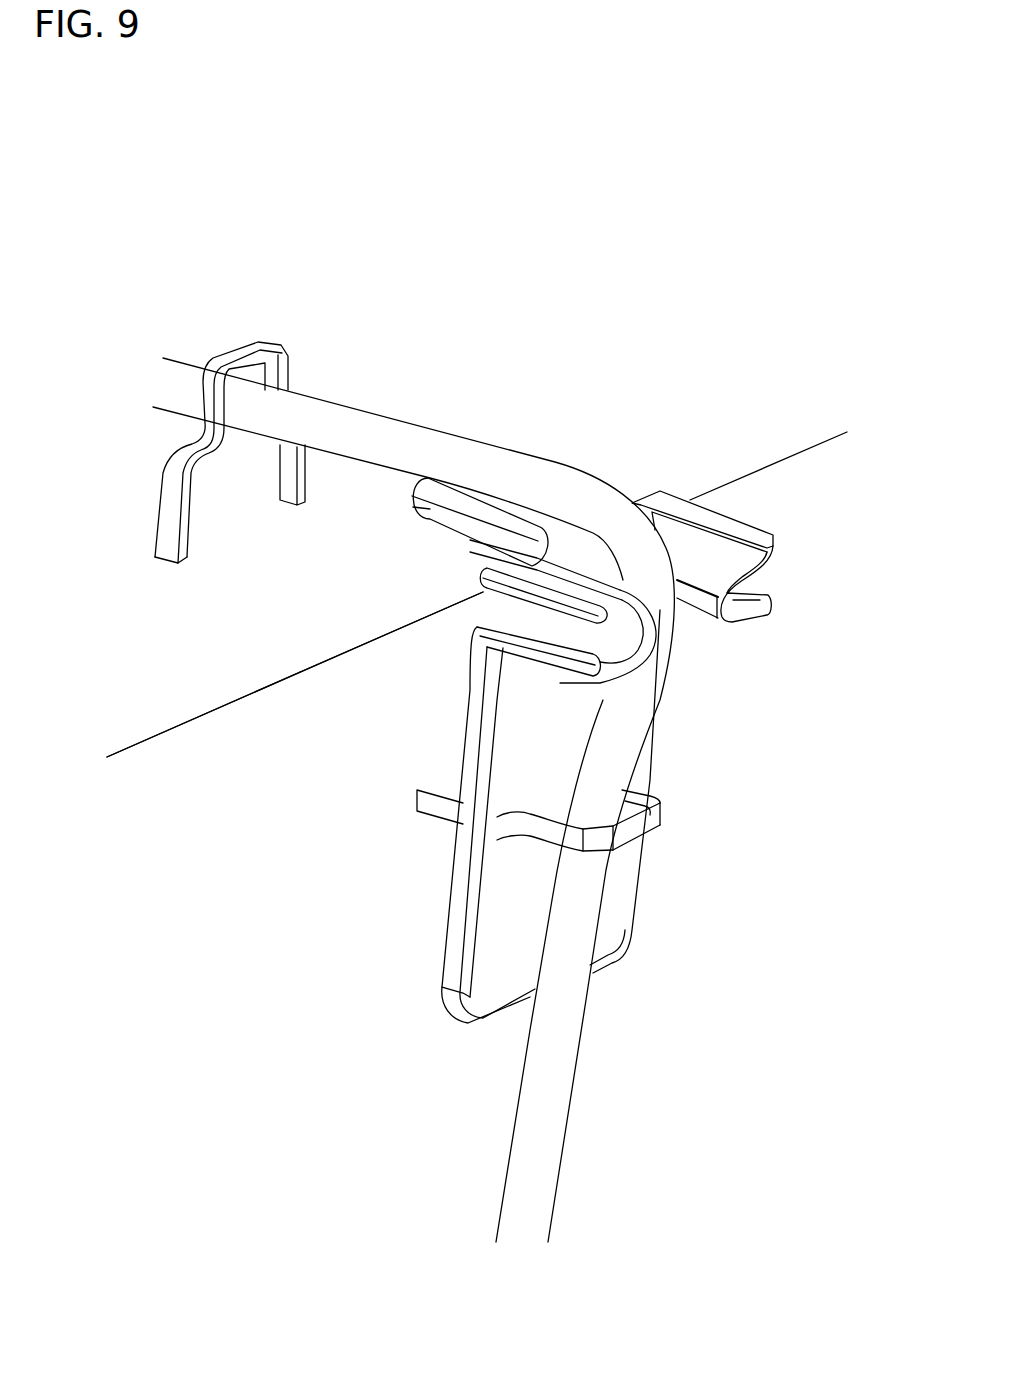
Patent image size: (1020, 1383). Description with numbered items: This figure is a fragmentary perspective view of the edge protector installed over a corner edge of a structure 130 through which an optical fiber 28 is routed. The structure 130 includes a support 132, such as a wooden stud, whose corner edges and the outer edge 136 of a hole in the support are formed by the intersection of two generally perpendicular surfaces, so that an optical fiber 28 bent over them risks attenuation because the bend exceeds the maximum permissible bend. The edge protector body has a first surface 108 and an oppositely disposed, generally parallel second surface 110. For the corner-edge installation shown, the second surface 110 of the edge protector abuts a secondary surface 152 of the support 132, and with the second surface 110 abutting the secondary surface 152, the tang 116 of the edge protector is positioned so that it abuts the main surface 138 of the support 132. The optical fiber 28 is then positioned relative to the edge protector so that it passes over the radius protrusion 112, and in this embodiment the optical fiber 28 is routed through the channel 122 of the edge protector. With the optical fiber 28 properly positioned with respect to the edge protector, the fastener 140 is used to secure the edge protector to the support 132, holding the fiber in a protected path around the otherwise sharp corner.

The optical fiber 28 is at (347, 425).
The first surface 108 is at (489, 816).
The second surface 110 is at (447, 903).
The radius protrusion 112 is at (573, 557).
The tang 116 is at (447, 530).
The channel 122 is at (703, 547).
The structure 130 is at (582, 624).
The support 132 is at (737, 670).
The outer edge 136 is at (746, 477).
The main surface 138 is at (265, 627).
The fastener 140 is at (324, 336).
The secondary surface 152 is at (325, 790).